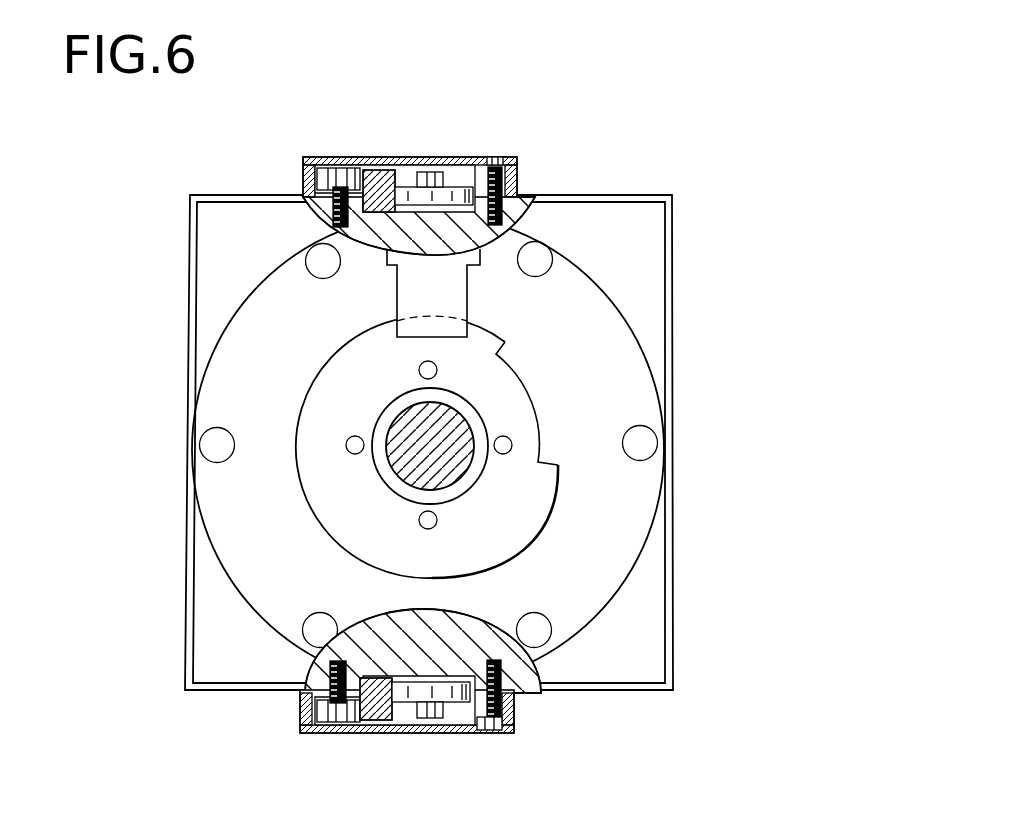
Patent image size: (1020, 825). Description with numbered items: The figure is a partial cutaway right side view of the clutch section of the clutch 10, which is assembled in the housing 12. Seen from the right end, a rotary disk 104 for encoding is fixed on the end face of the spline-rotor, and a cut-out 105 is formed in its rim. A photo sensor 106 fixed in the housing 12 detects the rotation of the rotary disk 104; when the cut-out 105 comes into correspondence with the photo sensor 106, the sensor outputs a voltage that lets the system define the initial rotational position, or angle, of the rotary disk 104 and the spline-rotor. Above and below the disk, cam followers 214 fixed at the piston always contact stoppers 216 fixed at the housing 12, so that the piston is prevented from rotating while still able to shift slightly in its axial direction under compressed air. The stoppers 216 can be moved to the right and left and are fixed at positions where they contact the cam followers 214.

The clutch 10 is at (184, 316).
The housing 12 is at (187, 622).
The rotary disk 104 is at (320, 458).
The cut-out 105 is at (505, 352).
The photo sensor 106 is at (467, 297).
The cam followers 214 is at (461, 157).
The stoppers 216 is at (375, 157).